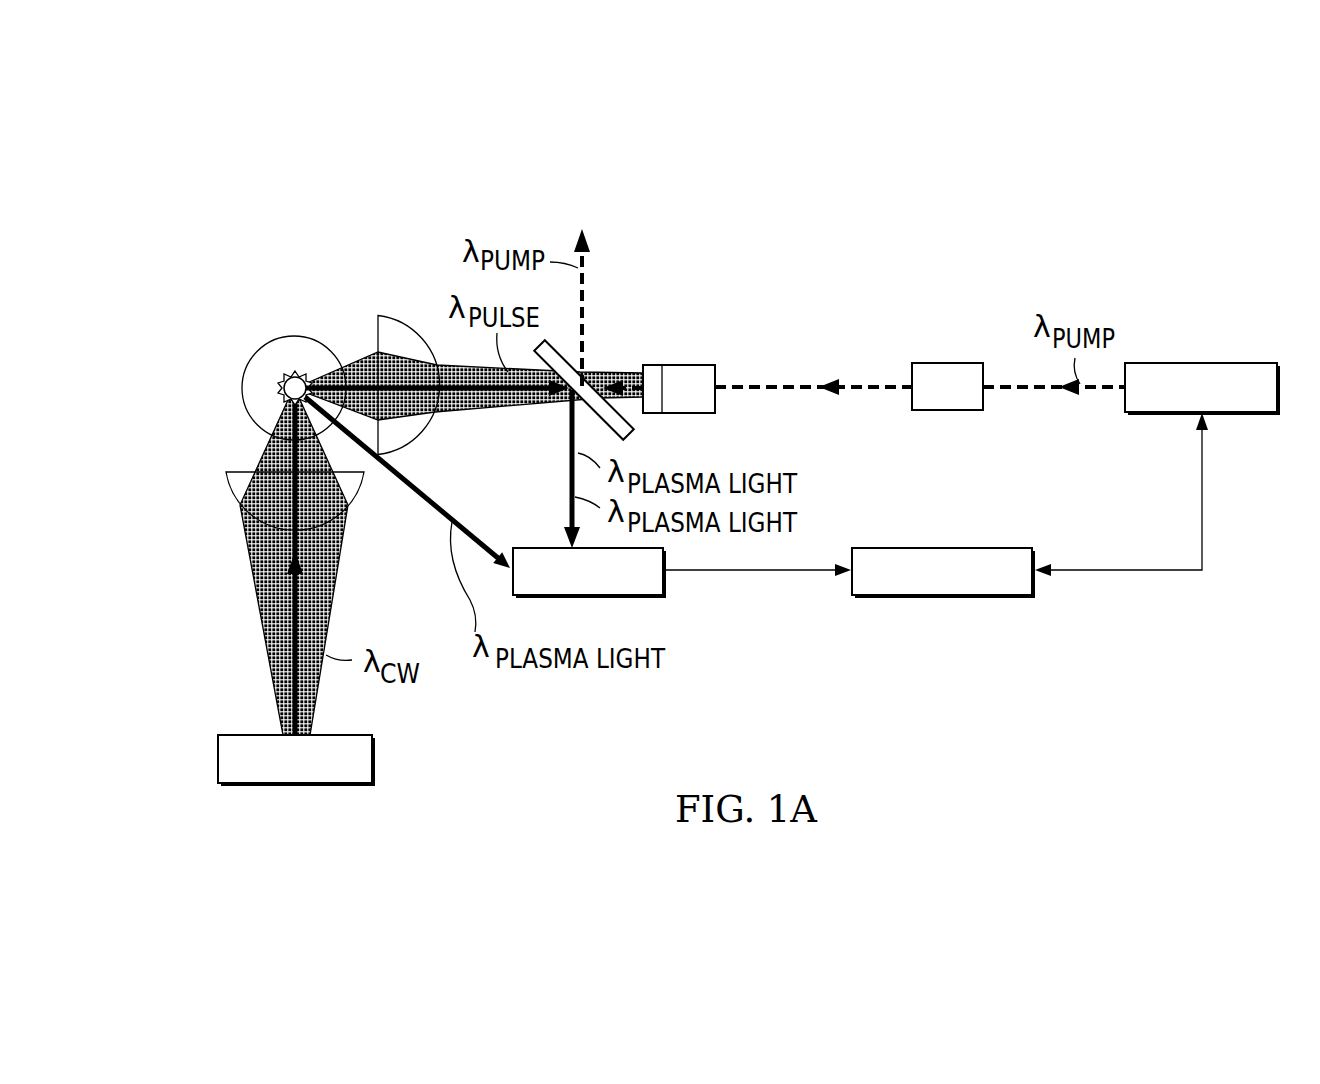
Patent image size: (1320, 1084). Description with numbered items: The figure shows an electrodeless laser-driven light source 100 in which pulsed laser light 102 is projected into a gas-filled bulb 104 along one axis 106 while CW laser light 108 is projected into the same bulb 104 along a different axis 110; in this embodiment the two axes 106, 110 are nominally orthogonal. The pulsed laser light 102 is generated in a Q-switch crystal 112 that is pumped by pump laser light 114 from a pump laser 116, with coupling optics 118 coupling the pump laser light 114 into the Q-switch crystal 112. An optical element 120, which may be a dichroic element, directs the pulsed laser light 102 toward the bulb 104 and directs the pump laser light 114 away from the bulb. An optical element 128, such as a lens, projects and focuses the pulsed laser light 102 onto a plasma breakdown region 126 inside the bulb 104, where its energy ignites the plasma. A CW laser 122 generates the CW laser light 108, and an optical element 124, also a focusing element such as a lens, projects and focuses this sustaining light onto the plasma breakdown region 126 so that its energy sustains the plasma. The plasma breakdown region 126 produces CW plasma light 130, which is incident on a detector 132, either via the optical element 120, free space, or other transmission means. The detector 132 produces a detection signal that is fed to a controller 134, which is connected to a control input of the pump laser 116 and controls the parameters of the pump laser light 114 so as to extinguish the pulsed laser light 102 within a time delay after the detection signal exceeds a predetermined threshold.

The electrodeless laser-driven light source 100 is at (204, 212).
The pulsed laser light 102 is at (523, 392).
The gas-filled bulb 104 is at (294, 336).
The axis 106 is at (360, 384).
The CW laser light 108 is at (264, 620).
The axis 110 is at (302, 602).
The Q-switch crystal 112 is at (710, 400).
The pump laser light 114 is at (1040, 394).
The pump laser 116 is at (1202, 362).
The coupling optics 118 is at (945, 398).
The optical element 120 is at (548, 350).
The CW laser 122 is at (217, 762).
The optical element 124 is at (236, 492).
The plasma breakdown region 126 is at (283, 383).
The optical element 128 is at (394, 340).
The CW plasma light 130 is at (452, 394).
The detector 132 is at (667, 583).
The controller 134 is at (945, 547).